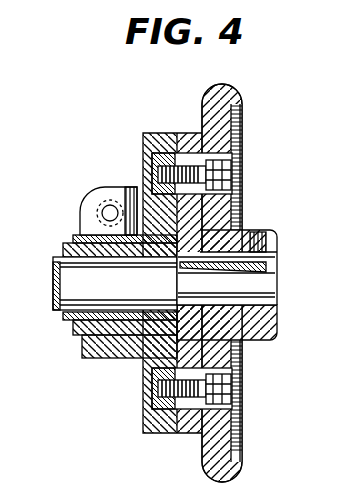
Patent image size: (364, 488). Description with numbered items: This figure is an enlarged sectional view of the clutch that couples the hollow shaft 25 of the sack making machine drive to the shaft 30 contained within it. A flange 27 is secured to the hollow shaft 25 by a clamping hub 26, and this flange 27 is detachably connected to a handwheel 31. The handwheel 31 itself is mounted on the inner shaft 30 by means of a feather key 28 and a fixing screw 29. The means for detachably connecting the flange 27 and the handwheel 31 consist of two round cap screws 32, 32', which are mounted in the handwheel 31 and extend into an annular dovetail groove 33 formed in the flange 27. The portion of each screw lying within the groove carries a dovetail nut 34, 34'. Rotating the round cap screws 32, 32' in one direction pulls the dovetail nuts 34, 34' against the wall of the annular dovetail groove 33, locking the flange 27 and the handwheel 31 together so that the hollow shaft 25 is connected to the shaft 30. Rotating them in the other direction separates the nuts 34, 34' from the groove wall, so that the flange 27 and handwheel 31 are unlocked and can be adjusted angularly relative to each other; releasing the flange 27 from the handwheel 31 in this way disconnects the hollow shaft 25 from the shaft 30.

The hollow shaft 25 is at (73, 233).
The clamping hub 26 is at (100, 196).
The flange 27 is at (152, 148).
The feather key 28 is at (273, 242).
The fixing screw 29 is at (258, 232).
The shaft 30 is at (56, 268).
The handwheel 31 is at (232, 345).
The round cap screw 32 is at (246, 164).
The round cap screw 32' is at (252, 389).
The annular dovetail groove 33 is at (150, 155).
The dovetail nut 34 is at (181, 136).
The dovetail nut 34' is at (176, 426).